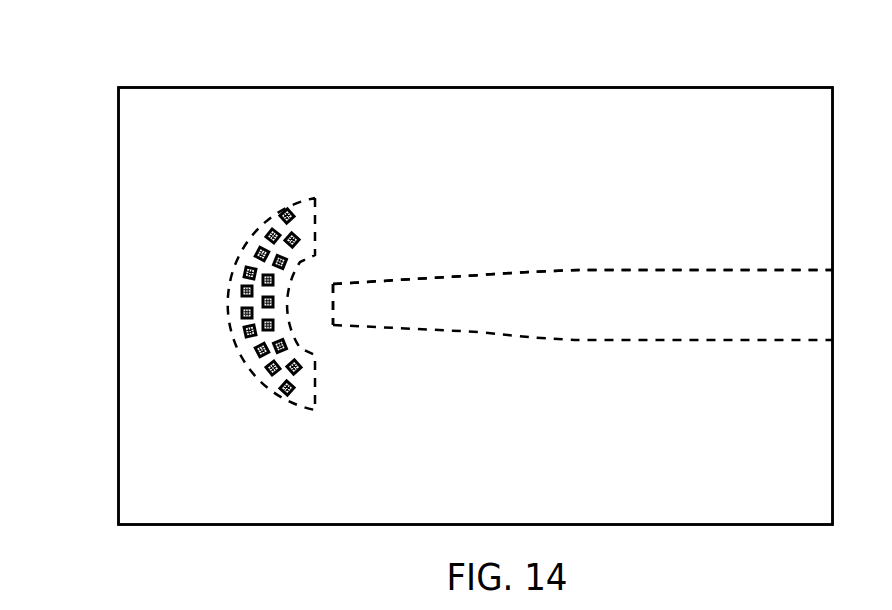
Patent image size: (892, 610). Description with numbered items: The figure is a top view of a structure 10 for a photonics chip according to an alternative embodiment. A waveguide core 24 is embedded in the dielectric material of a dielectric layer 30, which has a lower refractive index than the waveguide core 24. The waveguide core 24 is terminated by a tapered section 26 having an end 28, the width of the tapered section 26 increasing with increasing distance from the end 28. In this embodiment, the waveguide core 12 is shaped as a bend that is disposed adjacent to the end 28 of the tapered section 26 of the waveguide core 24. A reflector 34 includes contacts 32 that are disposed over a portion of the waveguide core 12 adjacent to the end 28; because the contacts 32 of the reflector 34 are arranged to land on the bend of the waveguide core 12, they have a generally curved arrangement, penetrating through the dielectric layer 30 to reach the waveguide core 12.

The structure 10 is at (119, 55).
The waveguide core 12 is at (213, 292).
The waveguide core 24 is at (617, 258).
The tapered section 26 is at (453, 277).
The end 28 is at (333, 305).
The dielectric layer 30 is at (177, 443).
The contacts 32 is at (297, 368).
The reflector 34 is at (300, 210).